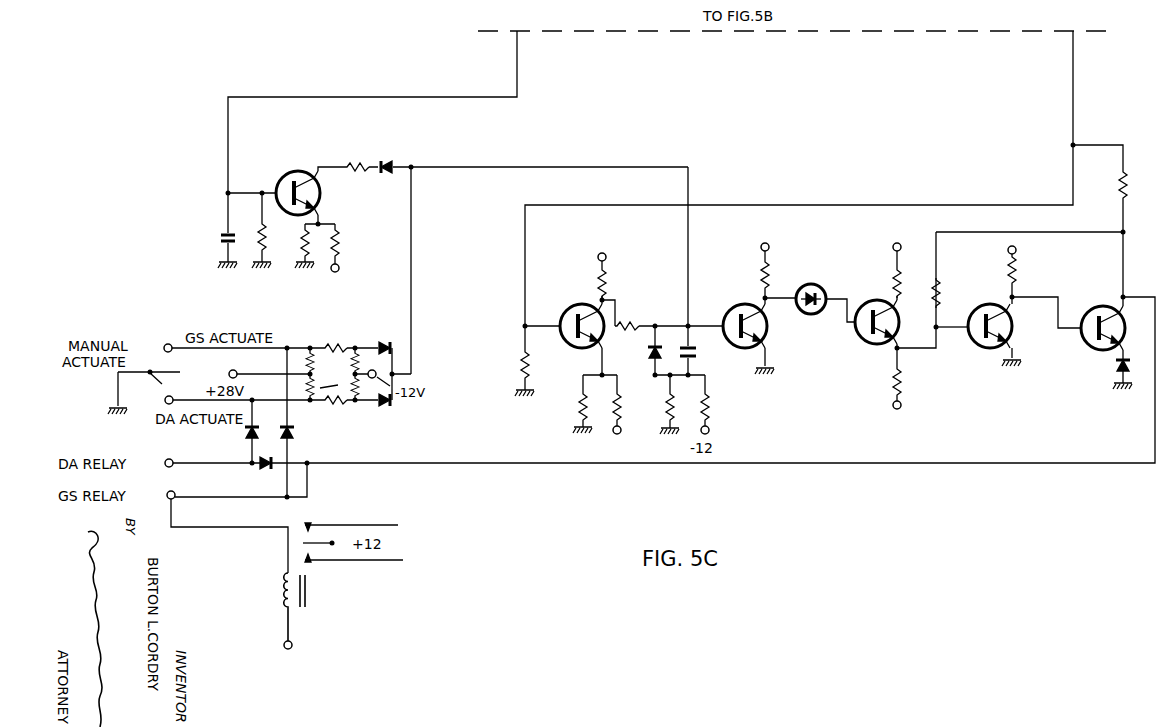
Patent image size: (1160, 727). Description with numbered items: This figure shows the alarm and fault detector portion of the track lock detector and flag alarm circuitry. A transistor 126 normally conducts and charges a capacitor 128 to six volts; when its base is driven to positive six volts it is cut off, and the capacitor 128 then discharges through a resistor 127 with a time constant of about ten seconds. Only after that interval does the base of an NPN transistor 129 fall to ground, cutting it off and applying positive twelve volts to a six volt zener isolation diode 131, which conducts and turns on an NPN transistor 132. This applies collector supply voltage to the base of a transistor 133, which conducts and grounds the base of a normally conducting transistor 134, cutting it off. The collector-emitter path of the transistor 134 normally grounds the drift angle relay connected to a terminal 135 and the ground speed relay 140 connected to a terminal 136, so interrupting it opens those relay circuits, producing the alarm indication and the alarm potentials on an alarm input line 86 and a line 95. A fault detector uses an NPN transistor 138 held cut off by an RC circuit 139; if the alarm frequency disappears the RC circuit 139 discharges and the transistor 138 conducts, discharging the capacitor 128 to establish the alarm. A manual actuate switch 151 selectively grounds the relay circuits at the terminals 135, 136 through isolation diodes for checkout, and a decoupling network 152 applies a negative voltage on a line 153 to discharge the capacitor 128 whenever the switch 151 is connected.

The alarm input line 86 is at (350, 525).
The line 95 is at (366, 560).
The transistor 126 is at (581, 306).
The resistor 127 is at (638, 332).
The capacitor 128 is at (695, 357).
The NPN transistor 129 is at (744, 306).
The zener isolation diode 131 is at (817, 286).
The NPN transistor 132 is at (875, 297).
The transistor 133 is at (987, 302).
The transistor 134 is at (1091, 306).
The terminal 135 is at (175, 459).
The terminal 136 is at (173, 501).
The NPN transistor 138 is at (279, 181).
The RC circuit 139 is at (258, 219).
The ground speed relay 140 is at (305, 608).
The manual actuate switch 151 is at (158, 383).
The decoupling network 152 is at (358, 374).
The line 153 is at (411, 236).